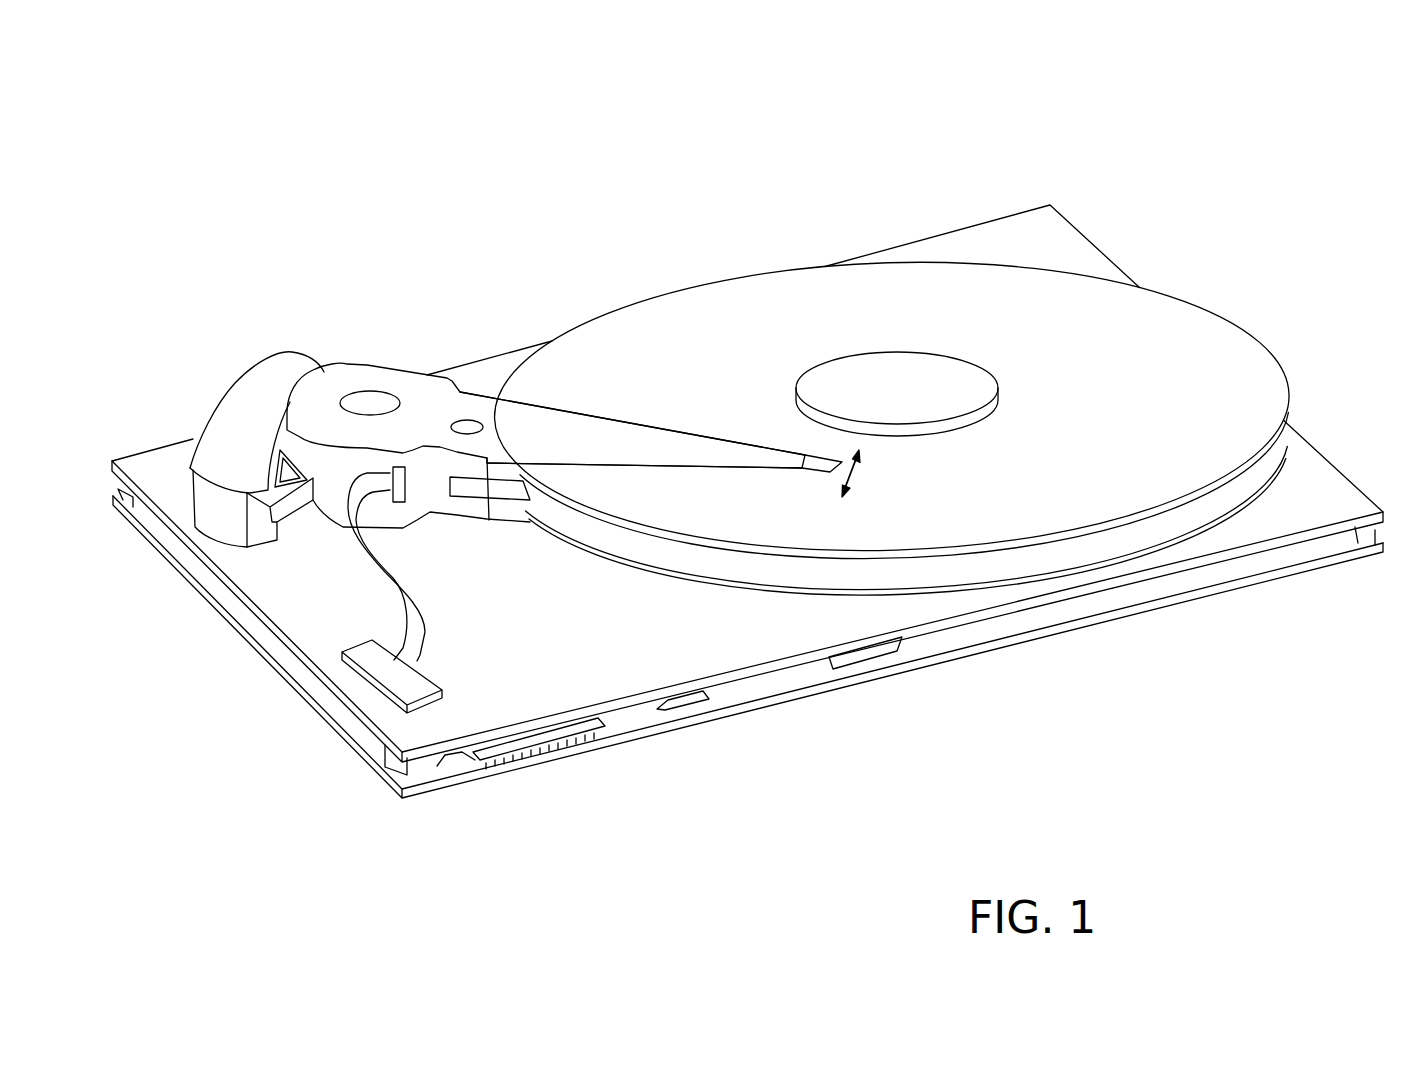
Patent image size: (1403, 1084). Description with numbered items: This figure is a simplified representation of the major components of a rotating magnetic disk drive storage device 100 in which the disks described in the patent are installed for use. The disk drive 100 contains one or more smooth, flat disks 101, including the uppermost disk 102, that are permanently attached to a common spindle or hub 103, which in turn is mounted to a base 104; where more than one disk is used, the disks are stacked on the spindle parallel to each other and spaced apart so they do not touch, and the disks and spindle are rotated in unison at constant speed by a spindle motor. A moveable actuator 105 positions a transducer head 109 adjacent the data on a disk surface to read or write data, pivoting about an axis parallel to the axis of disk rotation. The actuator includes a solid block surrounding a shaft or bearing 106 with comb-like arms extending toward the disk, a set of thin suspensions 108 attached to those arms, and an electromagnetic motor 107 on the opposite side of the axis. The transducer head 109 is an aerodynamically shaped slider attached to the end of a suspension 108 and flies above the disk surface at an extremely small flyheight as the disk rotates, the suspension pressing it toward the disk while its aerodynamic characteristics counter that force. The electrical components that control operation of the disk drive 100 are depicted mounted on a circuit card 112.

The rotating magnetic disk drive storage device 100 is at (1134, 199).
The disks 101 is at (1233, 515).
The disk 102 is at (842, 288).
The spindle or hub 103 is at (933, 380).
The base 104 is at (1318, 462).
The actuator 105 is at (393, 375).
The shaft or bearing 106 is at (367, 402).
The electromagnetic motor 107 is at (197, 430).
The suspensions 108 is at (543, 428).
The transducer head 109 is at (823, 473).
The circuit card 112 is at (768, 708).